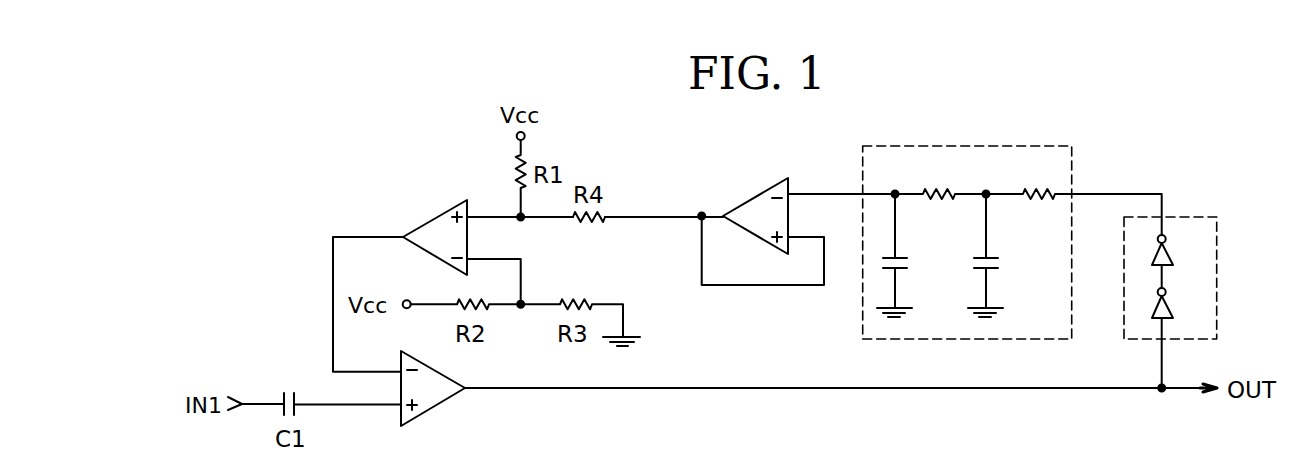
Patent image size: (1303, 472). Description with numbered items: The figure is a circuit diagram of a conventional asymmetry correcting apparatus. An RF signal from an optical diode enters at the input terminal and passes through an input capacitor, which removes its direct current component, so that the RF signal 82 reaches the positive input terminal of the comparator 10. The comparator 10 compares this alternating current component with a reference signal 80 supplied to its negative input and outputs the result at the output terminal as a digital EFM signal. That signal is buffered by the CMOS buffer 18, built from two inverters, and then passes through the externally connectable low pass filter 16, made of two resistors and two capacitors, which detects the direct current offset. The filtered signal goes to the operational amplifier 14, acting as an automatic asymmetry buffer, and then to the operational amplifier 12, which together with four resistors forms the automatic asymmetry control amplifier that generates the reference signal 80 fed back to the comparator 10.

The comparator 10 is at (433, 407).
The operational amplifier 12 is at (433, 217).
The operational amplifier 14 is at (755, 192).
The low pass filter 16 is at (1072, 160).
The CMOS buffer 18 is at (1192, 215).
The reference signal 80 is at (333, 235).
The RF signal 82 is at (347, 406).